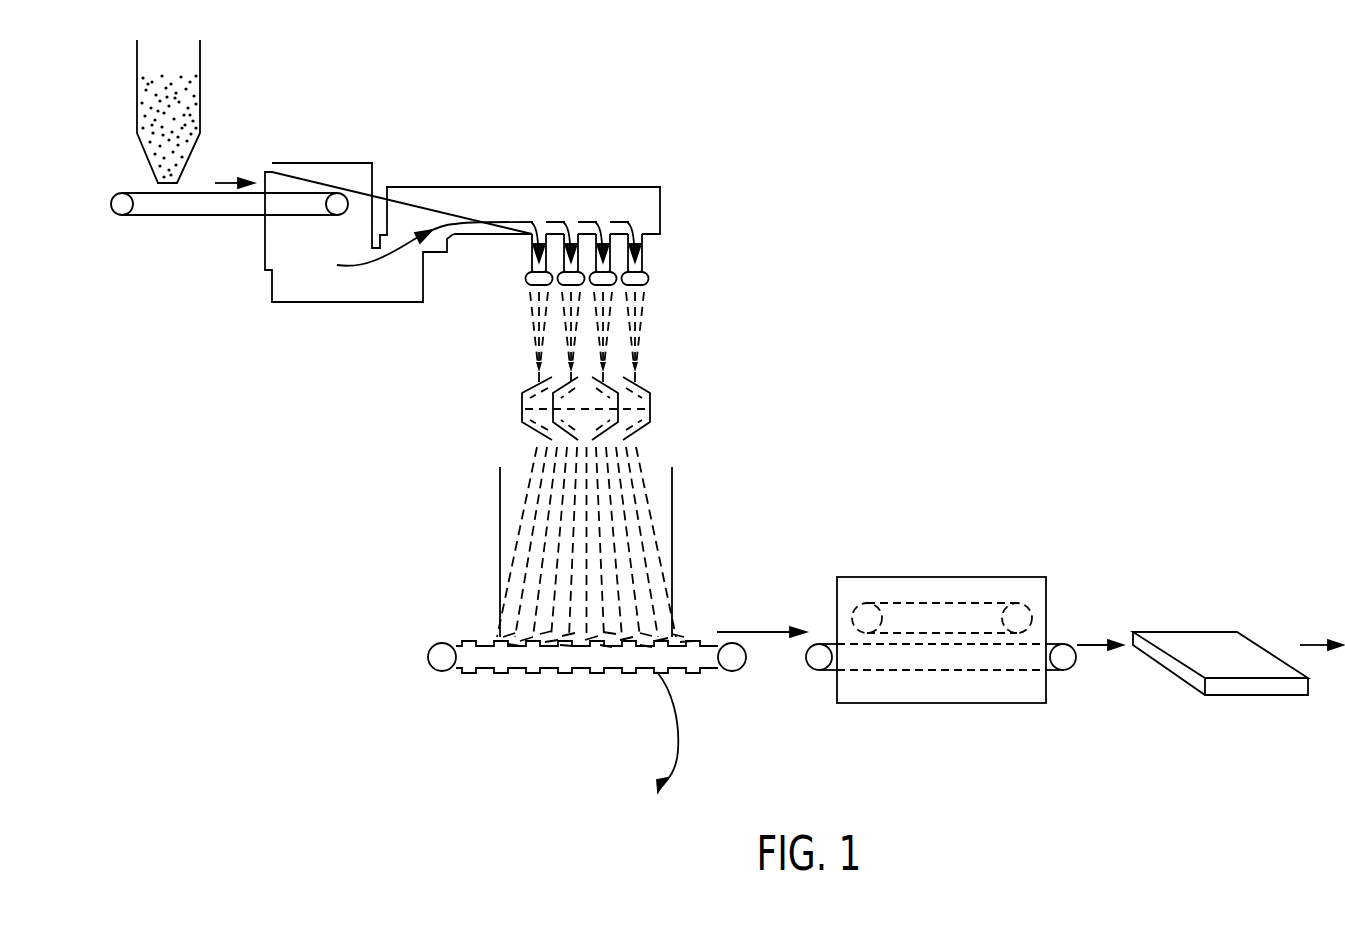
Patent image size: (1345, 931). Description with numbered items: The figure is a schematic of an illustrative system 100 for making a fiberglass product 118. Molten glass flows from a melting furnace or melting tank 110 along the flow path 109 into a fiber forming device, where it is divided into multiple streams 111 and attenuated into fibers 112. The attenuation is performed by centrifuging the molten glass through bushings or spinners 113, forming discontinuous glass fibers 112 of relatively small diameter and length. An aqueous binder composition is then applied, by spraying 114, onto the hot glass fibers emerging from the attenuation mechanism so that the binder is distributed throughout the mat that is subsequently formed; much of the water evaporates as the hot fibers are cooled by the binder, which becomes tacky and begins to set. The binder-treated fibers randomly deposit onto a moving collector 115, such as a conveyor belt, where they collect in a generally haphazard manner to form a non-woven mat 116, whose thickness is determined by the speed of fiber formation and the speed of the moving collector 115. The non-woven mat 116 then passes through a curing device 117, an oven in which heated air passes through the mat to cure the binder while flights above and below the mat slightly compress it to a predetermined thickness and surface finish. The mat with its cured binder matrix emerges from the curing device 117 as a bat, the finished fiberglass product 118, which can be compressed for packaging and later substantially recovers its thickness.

The system for making a fiberglass product 100 is at (694, 416).
The polymer flow direction 109 is at (220, 183).
The melting furnace or melting tank 110 is at (137, 85).
The streams 111 is at (585, 222).
The fibers 112 is at (642, 324).
The bushings or spinners 113 is at (525, 280).
The spraying 114 is at (668, 409).
The moving collector 115 is at (462, 668).
The non-woven mat 116 is at (557, 648).
The curing device 117 is at (952, 576).
The fiberglass product 118 is at (1193, 631).